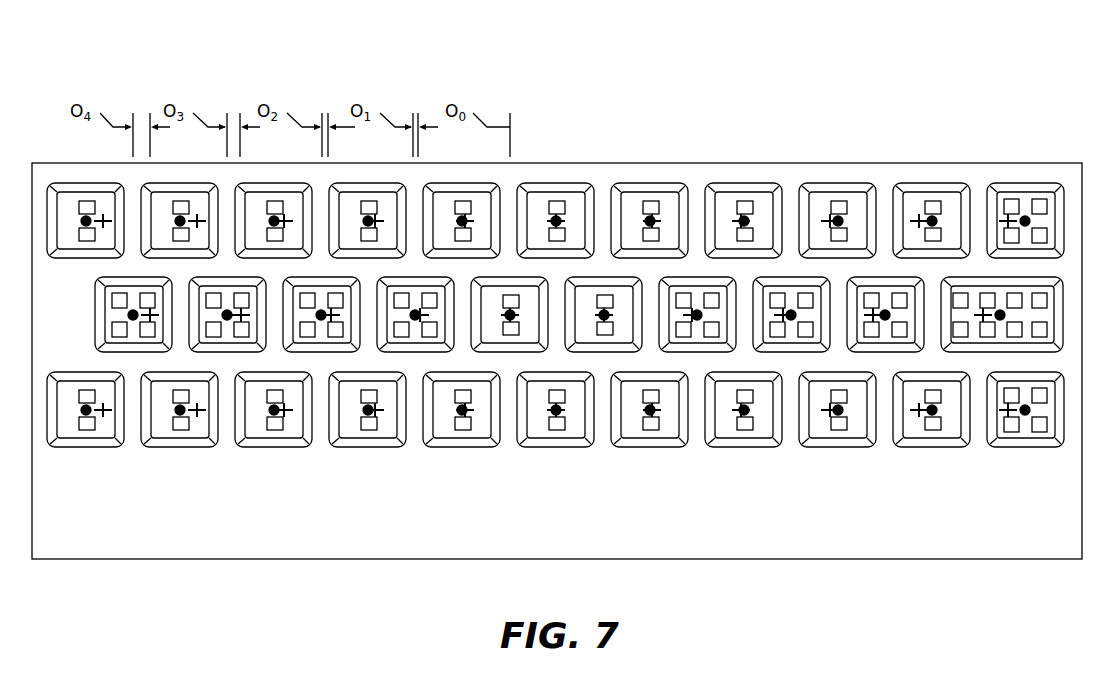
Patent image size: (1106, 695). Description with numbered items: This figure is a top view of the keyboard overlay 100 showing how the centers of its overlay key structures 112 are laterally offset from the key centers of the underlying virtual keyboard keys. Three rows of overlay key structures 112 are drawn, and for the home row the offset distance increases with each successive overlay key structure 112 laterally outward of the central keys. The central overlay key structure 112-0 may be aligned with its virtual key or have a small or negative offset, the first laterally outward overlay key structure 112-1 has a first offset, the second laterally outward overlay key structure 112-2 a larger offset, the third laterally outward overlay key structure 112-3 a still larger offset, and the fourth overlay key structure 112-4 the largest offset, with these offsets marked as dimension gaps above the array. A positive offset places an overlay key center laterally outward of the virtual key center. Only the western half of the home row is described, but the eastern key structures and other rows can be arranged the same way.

The keyboard overlay 100 is at (969, 77).
The overlay key structure 112 is at (667, 210).
The fourth overlay key structure 112-4 is at (133, 337).
The third laterally outward overlay key structure 112-3 is at (227, 337).
The second laterally outward overlay key structure 112-2 is at (322, 337).
The first laterally outward overlay key structure 112-1 is at (415, 337).
The central overlay key structure 112-0 is at (509, 337).